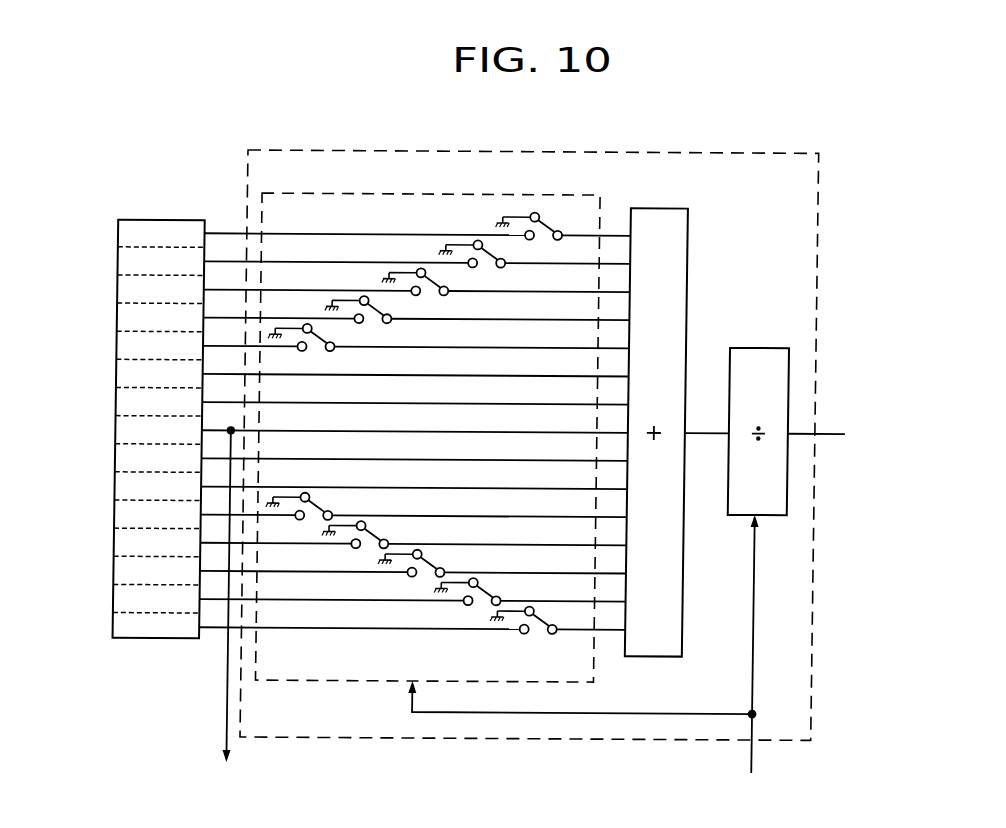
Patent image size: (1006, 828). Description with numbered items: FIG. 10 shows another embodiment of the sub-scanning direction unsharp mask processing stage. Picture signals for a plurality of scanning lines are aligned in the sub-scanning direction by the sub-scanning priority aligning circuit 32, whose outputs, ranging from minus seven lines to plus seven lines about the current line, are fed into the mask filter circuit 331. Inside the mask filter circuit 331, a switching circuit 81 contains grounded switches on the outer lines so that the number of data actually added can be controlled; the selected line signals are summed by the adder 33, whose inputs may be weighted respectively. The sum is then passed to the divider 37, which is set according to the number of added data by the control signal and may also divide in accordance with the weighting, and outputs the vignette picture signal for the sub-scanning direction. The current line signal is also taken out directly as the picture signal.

The sub-scanning priority aligning circuit 32 is at (124, 221).
The mask filter circuit 331 is at (737, 147).
The adder 33 is at (688, 257).
The divider 37 is at (758, 345).
The switching circuit 81 is at (600, 660).